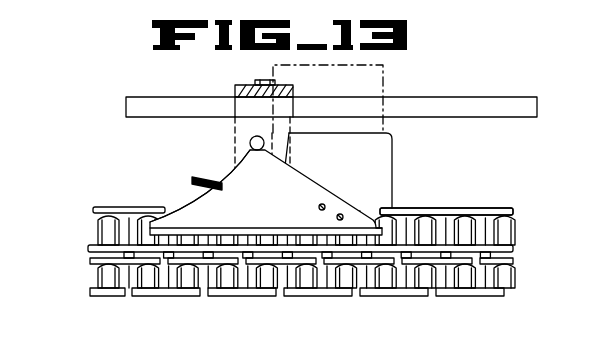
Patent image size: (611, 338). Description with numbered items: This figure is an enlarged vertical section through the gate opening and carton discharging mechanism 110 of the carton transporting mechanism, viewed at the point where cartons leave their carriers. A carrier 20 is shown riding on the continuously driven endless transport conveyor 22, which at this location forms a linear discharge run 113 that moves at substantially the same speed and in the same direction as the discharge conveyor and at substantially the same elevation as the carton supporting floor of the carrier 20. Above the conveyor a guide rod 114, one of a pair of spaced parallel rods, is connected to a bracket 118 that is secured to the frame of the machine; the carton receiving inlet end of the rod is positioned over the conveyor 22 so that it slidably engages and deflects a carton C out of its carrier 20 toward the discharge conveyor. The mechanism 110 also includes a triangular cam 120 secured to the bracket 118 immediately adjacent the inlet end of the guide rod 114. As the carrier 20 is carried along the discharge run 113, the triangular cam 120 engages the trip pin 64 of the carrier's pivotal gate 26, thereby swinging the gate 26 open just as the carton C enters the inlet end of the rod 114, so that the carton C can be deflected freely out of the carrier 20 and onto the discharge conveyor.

The transport conveyor 22 is at (522, 212).
The linear discharge run 113 is at (447, 207).
The guide rod 114 is at (510, 100).
The carton C is at (383, 65).
The bracket 118 is at (232, 127).
The carrier 20 is at (388, 160).
The triangular cam 120 is at (297, 187).
The gate opening and carton discharging mechanism 110 is at (136, 141).
The pivotal gate 26 is at (193, 179).
The trip pin 64 is at (250, 141).